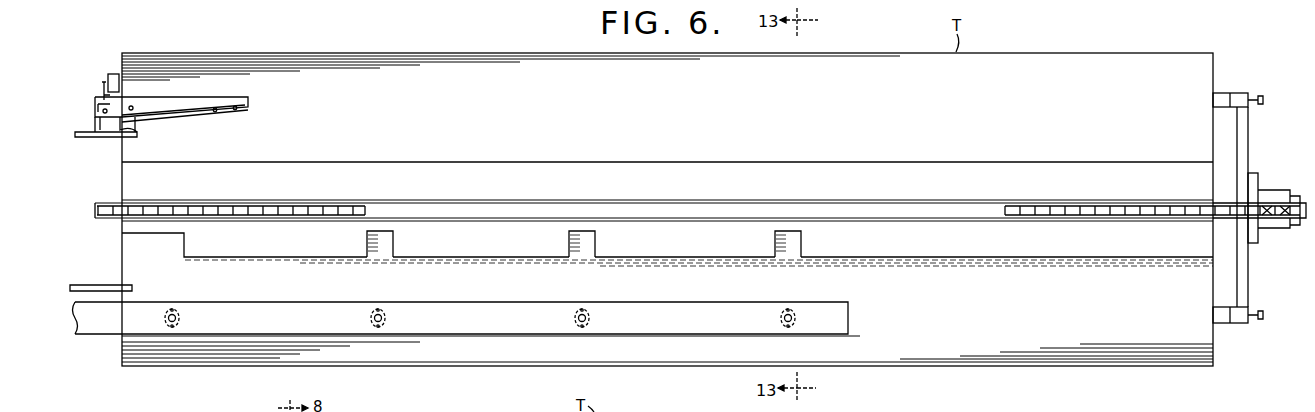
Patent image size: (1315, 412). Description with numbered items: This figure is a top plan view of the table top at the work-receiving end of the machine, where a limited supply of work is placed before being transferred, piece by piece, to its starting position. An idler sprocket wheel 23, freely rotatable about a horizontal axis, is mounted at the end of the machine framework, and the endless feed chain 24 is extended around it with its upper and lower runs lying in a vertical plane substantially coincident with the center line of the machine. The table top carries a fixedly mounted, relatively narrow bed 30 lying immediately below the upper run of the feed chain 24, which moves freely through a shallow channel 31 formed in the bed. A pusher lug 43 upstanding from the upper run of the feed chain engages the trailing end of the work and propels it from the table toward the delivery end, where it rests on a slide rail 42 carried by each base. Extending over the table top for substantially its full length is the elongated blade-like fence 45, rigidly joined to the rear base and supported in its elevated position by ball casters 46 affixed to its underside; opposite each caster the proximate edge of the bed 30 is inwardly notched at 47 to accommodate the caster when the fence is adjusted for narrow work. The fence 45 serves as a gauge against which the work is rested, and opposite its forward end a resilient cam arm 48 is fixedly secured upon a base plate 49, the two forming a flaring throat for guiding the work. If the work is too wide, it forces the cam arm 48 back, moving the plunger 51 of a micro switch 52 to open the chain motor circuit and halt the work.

The idler sprocket wheel 23 is at (1283, 195).
The endless feed chain 24 is at (1194, 204).
The bed 30 is at (992, 250).
The shallow channel 31 is at (1021, 196).
The slide rail 42 is at (130, 132).
The pusher lug 43 is at (301, 205).
The fence 45 is at (850, 318).
The ball caster 46 is at (170, 328).
The notch 47 is at (390, 248).
The resilient cam arm 48 is at (185, 110).
The base plate 49 is at (196, 97).
The plunger 51 is at (103, 111).
The micro switch 52 is at (109, 74).